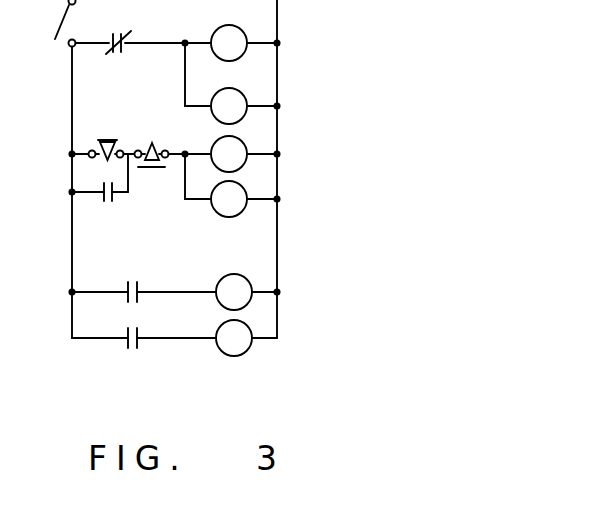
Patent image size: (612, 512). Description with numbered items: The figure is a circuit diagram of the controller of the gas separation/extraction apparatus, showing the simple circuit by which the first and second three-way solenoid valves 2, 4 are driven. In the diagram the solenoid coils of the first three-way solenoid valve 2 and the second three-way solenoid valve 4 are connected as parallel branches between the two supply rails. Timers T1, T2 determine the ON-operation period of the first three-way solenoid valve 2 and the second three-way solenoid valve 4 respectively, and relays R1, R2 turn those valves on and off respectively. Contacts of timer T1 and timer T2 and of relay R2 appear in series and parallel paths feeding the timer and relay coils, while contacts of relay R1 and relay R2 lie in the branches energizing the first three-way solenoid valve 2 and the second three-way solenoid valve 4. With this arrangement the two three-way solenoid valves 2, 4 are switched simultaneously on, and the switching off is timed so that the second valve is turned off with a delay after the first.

The first three-way solenoid valve 2 is at (218, 280).
The second three-way solenoid valve 4 is at (221, 354).
The timer T1 is at (171, 92).
The timer T2 is at (192, 140).
The relay R1 is at (184, 195).
The relay R2 is at (175, 175).